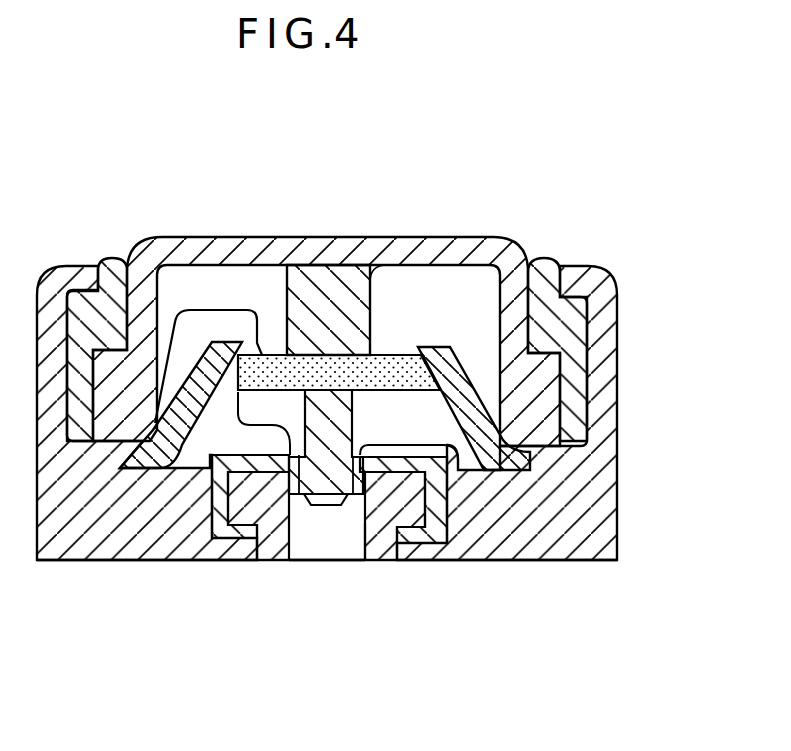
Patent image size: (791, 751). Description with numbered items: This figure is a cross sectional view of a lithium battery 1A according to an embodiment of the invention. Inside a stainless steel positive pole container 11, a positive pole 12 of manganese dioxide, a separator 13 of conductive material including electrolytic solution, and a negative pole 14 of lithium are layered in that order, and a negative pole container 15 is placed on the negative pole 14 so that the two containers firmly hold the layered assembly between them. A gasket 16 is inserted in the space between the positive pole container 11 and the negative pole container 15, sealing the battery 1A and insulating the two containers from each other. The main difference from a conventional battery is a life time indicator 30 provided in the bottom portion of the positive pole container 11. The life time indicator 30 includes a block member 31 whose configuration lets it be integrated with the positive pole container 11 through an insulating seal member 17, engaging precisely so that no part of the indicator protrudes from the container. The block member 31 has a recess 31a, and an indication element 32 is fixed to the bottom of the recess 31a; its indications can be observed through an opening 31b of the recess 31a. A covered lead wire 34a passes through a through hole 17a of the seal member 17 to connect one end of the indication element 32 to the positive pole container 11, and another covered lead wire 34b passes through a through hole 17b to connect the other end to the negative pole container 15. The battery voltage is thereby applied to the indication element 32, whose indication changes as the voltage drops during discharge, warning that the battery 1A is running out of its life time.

The battery 1A is at (676, 211).
The positive pole container 11 is at (612, 536).
The positive pole 12 is at (305, 410).
The separator 13 is at (387, 355).
The negative pole 14 is at (393, 264).
The negative pole container 15 is at (314, 237).
The gasket 16 is at (111, 258).
The insulating seal member 17 is at (351, 512).
The through hole 17a is at (357, 456).
The through hole 17b is at (289, 455).
The life time indicator 30 is at (298, 636).
The block member 31 is at (279, 542).
The recess 31a is at (363, 545).
The opening 31b is at (330, 561).
The indication element 32 is at (328, 507).
The covered lead wire 34a is at (430, 390).
The covered lead wire 34b is at (231, 423).